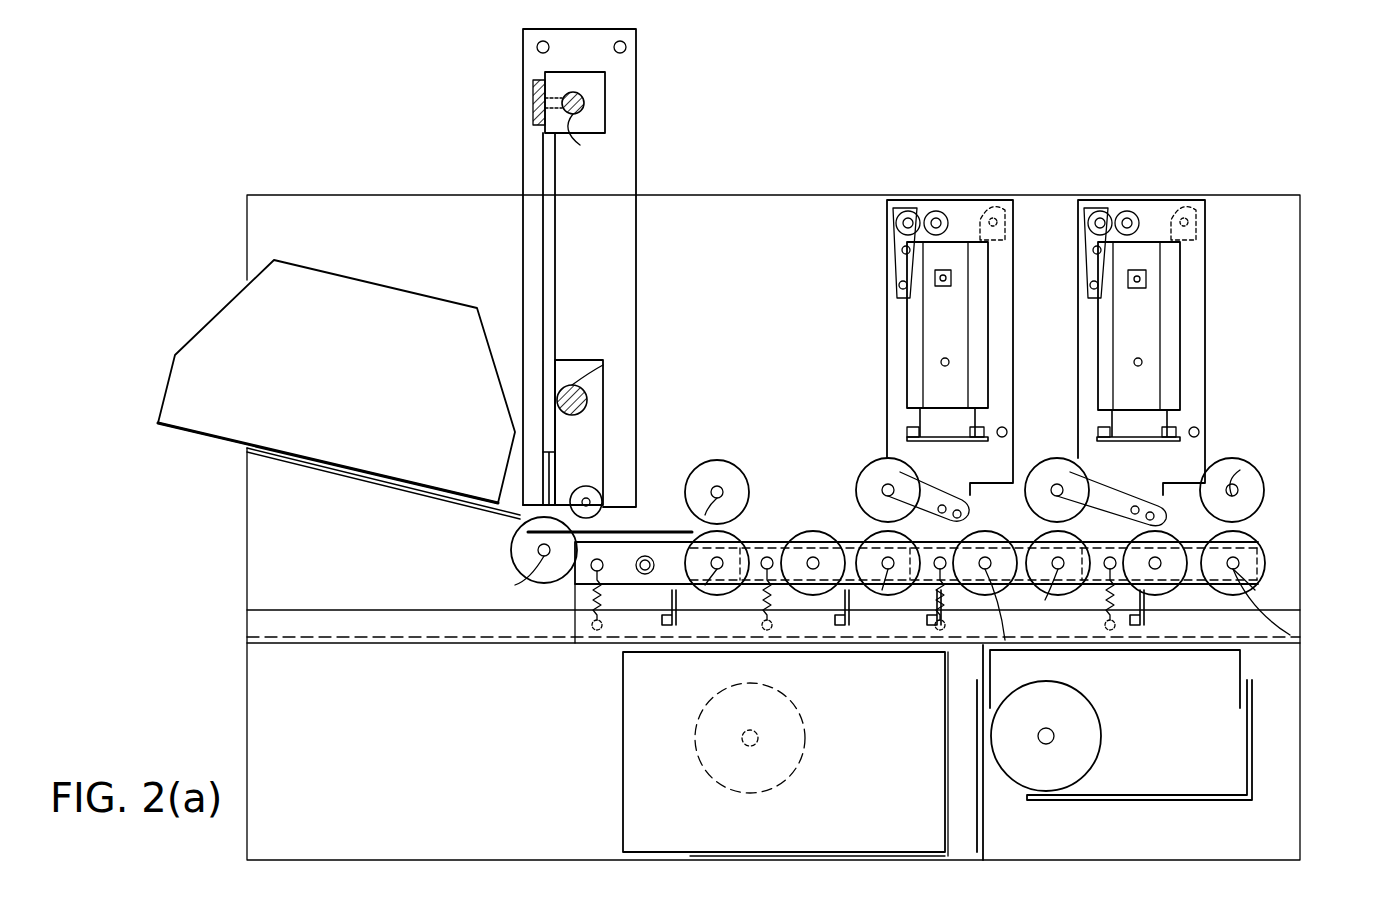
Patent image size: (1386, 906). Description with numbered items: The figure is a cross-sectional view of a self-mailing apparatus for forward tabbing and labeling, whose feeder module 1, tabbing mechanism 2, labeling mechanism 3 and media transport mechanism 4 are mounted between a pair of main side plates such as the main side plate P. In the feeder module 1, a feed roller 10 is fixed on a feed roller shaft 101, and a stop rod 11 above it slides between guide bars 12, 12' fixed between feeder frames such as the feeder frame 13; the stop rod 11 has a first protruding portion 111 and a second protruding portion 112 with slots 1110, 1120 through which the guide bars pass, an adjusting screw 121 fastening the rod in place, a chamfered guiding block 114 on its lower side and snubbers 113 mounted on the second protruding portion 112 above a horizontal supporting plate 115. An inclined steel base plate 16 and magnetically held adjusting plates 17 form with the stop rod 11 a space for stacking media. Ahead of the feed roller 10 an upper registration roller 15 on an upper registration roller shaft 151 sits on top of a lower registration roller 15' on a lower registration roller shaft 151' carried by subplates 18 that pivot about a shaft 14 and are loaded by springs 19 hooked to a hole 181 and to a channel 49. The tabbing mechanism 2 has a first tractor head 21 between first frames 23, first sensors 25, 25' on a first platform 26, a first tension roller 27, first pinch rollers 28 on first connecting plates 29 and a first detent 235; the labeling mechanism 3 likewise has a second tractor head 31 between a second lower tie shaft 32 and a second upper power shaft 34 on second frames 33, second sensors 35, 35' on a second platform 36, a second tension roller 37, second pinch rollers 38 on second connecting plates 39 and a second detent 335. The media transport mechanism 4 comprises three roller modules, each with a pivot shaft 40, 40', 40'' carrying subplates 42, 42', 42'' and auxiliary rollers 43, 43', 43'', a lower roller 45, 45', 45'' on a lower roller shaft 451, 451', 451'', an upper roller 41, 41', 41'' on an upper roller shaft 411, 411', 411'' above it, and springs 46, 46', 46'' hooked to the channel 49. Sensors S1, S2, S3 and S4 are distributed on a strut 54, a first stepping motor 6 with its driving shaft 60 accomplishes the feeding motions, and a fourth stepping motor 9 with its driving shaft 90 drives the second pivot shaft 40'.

The main side plate P is at (303, 205).
The feeder module 1 is at (497, 208).
The tabbing mechanism 2 is at (960, 185).
The labeling mechanism 3 is at (1226, 213).
The media transport mechanism 4 is at (1296, 553).
The first stepping motor 6 is at (800, 752).
The fourth stepping motor 9 is at (1090, 752).
The feed roller 10 is at (515, 553).
The stop rod 11 is at (530, 285).
The guide bar 12 is at (617, 99).
The guide bar 12' is at (618, 401).
The feeder frame 13 is at (632, 42).
The shaft 14 is at (648, 562).
The upper registration roller 15 is at (727, 464).
The lower registration roller 15' is at (738, 540).
The base plate 16 is at (376, 485).
The adjusting plate 17 is at (225, 315).
The subplate 18 is at (625, 580).
The spring 19 is at (590, 600).
The first tractor head 21 is at (932, 315).
The first frame 23 is at (890, 340).
The first sensor 25 is at (880, 400).
The first sensor 25' is at (1011, 405).
The first platform 26 is at (947, 441).
The first tension roller 27 is at (935, 213).
The first pinch roller 28 is at (905, 215).
The first connecting plate 29 is at (895, 250).
The second tractor head 31 is at (1150, 318).
The second lower tie shaft 32 is at (1145, 362).
The second frame 33 is at (1195, 368).
The second upper power shaft 34 is at (1145, 285).
The second sensor 35 is at (1071, 387).
The second sensor 35' is at (1232, 402).
The second platform 36 is at (1130, 441).
The second tension roller 37 is at (1127, 213).
The second pinch roller 38 is at (1097, 215).
The second connecting plate 39 is at (1080, 235).
The first pivot shaft 40 is at (804, 606).
The second pivot shaft 40' is at (992, 550).
The third pivot shaft 40'' is at (1163, 547).
The first upper roller 41 is at (875, 463).
The second upper roller 41' is at (1057, 462).
The third upper roller 41'' is at (1235, 462).
The first subplate 42 is at (842, 515).
The second subplate 42' is at (1008, 625).
The third subplate 42'' is at (1294, 615).
The first auxiliary roller 43 is at (808, 513).
The second auxiliary roller 43' is at (987, 518).
The third auxiliary roller 43'' is at (1114, 524).
The first lower roller 45 is at (888, 606).
The second lower roller 45' is at (1076, 606).
The third lower roller 45'' is at (1278, 563).
The first spring 46 is at (749, 619).
The second spring 46' is at (926, 641).
The third spring 46'' is at (1138, 619).
The channel 49 is at (355, 625).
The strut 54 is at (585, 635).
The driving shaft 60 is at (740, 738).
The driving shaft 90 is at (1052, 735).
The feed roller shaft 101 is at (523, 580).
The first protruding portion 111 is at (595, 90).
The second protruding portion 112 is at (598, 392).
The snubber 113 is at (600, 500).
The chamfered guiding block 114 is at (548, 470).
The supporting plate 115 is at (645, 530).
The adjusting screw 121 is at (540, 100).
The upper registration roller shaft 151 is at (750, 482).
The lower registration roller shaft 151' is at (754, 547).
The hole 181 is at (594, 572).
The first detent 235 is at (992, 208).
The second detent 335 is at (1188, 208).
The first upper roller shaft 411 is at (890, 485).
The second upper roller shaft 411' is at (1092, 476).
The third upper roller shaft 411'' is at (1270, 468).
The first lower roller shaft 451 is at (872, 625).
The second lower roller shaft 451' is at (1065, 625).
The third lower roller shaft 451'' is at (1300, 594).
The slot 1110 is at (580, 116).
The slot 1120 is at (580, 382).
The sensor S1 is at (680, 602).
The sensor S2 is at (845, 602).
The sensor S3 is at (942, 602).
The sensor S4 is at (1148, 602).